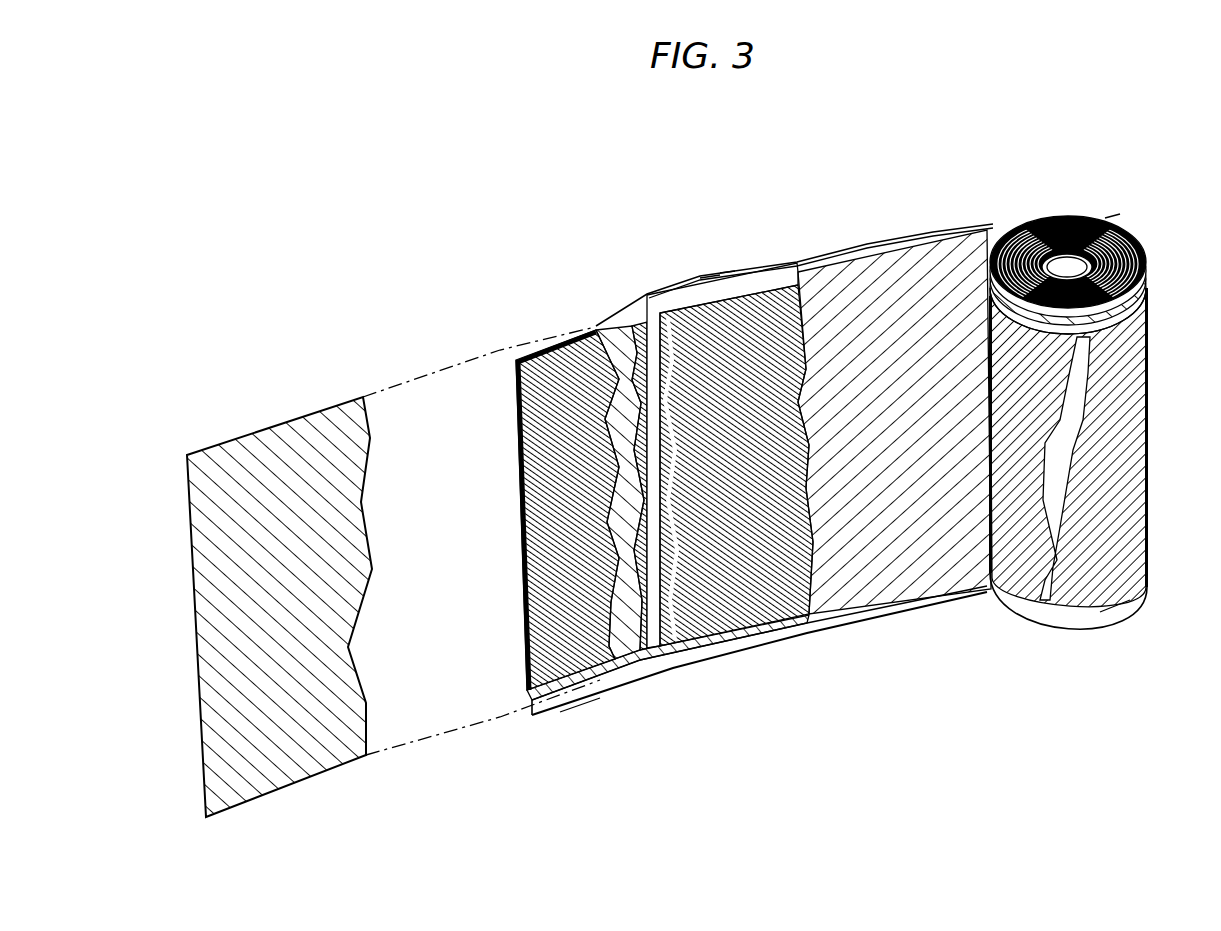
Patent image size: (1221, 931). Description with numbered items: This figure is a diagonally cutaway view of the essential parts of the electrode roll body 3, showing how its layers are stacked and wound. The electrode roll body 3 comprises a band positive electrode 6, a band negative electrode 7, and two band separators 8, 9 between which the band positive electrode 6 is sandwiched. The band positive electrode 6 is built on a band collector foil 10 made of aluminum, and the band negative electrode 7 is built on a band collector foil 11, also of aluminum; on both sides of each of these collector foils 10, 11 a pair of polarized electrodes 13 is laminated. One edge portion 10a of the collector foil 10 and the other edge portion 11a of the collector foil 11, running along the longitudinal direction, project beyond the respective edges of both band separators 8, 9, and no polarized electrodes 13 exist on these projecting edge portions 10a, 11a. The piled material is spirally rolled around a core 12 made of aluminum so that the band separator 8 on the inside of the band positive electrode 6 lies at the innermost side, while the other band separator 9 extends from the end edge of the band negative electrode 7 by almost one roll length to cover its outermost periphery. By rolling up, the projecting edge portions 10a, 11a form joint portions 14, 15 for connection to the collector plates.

The electrode roll body 3 is at (1148, 226).
The band positive electrode 6 is at (783, 262).
The band negative electrode 7 is at (595, 707).
The band separator 8 is at (892, 257).
The band separator 9 is at (270, 440).
The band collector foil 10 is at (707, 277).
The edge portion 10a is at (727, 270).
The band collector foil 11 is at (550, 722).
The edge portion 11a is at (570, 710).
The core 12 is at (1080, 260).
The polarized electrodes 13 is at (565, 345).
The joint portion 14 is at (760, 273).
The joint portion 15 is at (607, 687).